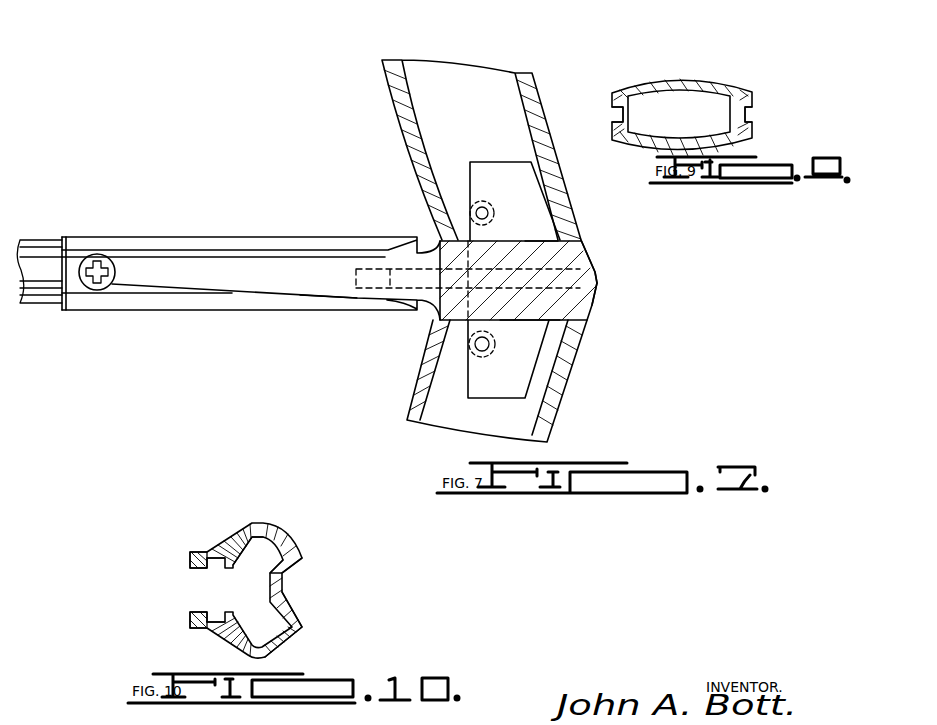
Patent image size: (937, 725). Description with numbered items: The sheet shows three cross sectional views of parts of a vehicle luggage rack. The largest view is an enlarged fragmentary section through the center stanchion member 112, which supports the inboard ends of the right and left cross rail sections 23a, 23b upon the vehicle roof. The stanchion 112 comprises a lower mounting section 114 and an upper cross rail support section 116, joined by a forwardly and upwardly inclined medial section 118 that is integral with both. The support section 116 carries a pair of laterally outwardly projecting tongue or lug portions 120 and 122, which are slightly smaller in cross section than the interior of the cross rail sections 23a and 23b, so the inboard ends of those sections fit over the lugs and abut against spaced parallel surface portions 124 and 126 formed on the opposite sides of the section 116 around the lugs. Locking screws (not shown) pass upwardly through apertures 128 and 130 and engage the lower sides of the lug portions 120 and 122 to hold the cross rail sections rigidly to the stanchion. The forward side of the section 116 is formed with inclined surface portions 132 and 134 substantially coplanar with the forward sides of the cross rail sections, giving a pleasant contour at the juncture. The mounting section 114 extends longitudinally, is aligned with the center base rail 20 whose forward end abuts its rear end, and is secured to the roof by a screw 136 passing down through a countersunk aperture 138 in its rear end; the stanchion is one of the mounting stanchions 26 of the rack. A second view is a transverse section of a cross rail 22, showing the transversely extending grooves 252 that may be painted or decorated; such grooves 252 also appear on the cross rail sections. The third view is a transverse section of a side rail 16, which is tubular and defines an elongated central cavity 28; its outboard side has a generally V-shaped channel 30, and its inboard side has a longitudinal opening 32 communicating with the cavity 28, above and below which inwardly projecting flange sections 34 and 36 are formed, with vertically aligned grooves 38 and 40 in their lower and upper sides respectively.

In FIG. 10, the side rail 16 is at (274, 527).
In FIG. 7, the base rail 20 is at (43, 305).
In FIG. 9, the cross rail 22 is at (686, 77).
In FIG. 7, the right cross rail section 23a is at (557, 408).
In FIG. 7, the left cross rail section 23b is at (560, 168).
In FIG. 7, the stanchion 26 is at (151, 10).
In FIG. 10, the central cavity 28 is at (278, 577).
In FIG. 10, the V-shaped channel 30 is at (287, 607).
In FIG. 10, the longitudinal opening 32 is at (273, 587).
In FIG. 10, the upper flange section 34 is at (193, 552).
In FIG. 10, the lower flange section 36 is at (203, 628).
In FIG. 10, the groove 38 is at (208, 565).
In FIG. 10, the groove 40 is at (207, 605).
In FIG. 7, the center stanchion member 112 is at (356, 301).
In FIG. 7, the lower mounting section 114 is at (210, 304).
In FIG. 7, the upper cross rail support section 116 is at (562, 255).
In FIG. 7, the medial section 118 is at (250, 270).
In FIG. 7, the lug portion 120 is at (485, 380).
In FIG. 7, the lug portion 122 is at (487, 167).
In FIG. 7, the surface portion 124 is at (528, 322).
In FIG. 7, the surface portion 126 is at (525, 240).
In FIG. 7, the aperture 128 is at (474, 346).
In FIG. 7, the aperture 130 is at (486, 208).
In FIG. 7, the inclined surface portion 132 is at (594, 305).
In FIG. 7, the inclined surface portion 134 is at (597, 268).
In FIG. 7, the screw 136 is at (93, 296).
In FIG. 7, the countersunk aperture 138 is at (86, 259).
In FIG. 7, the transverse groove 252 is at (537, 92).
In FIG. 9, the transverse groove 252 is at (603, 110).